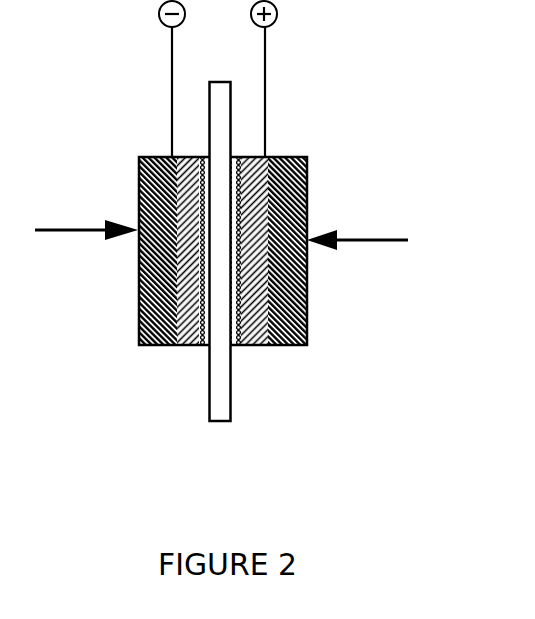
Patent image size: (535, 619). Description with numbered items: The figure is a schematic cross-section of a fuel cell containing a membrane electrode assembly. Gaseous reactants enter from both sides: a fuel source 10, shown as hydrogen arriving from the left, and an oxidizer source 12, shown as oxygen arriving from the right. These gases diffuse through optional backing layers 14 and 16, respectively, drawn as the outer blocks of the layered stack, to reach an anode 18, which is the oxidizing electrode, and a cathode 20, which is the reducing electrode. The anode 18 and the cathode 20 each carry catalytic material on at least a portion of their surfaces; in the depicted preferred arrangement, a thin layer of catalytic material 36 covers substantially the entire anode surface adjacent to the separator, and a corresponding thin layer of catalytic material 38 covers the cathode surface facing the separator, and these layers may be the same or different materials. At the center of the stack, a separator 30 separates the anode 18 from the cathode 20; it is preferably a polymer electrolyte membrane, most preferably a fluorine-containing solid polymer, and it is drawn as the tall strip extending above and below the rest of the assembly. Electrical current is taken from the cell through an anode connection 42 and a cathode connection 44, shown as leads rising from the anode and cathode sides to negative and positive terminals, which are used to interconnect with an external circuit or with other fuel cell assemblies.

The fuel source 10 is at (86, 227).
The oxidizer source 12 is at (359, 233).
The backing layer 14 is at (165, 283).
The backing layer 16 is at (288, 282).
The anode 18 is at (190, 347).
The cathode 20 is at (250, 347).
The separator 30 is at (223, 437).
The catalytic material layer 36 is at (205, 192).
The catalytic material layer 38 is at (242, 192).
The anode connection 42 is at (172, 58).
The cathode connection 44 is at (268, 58).